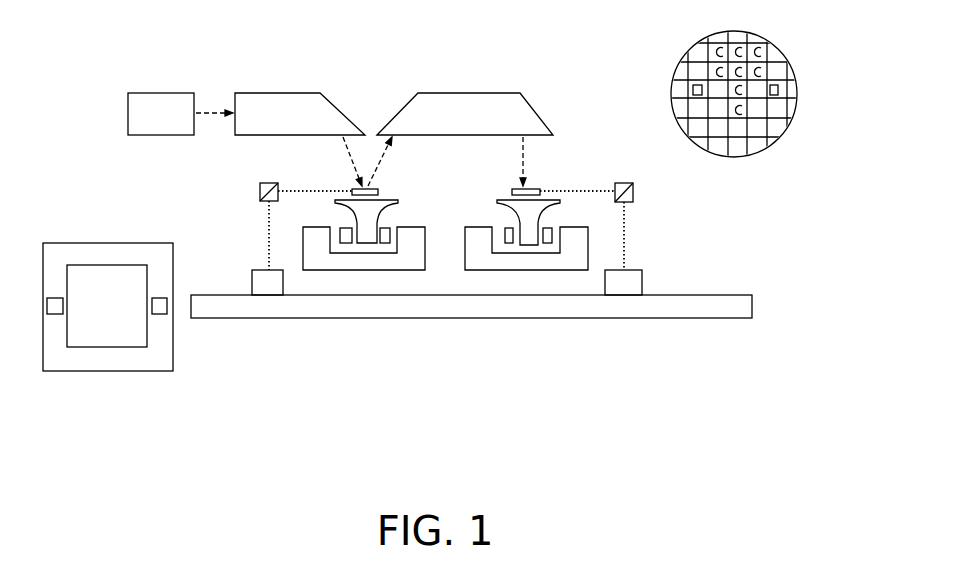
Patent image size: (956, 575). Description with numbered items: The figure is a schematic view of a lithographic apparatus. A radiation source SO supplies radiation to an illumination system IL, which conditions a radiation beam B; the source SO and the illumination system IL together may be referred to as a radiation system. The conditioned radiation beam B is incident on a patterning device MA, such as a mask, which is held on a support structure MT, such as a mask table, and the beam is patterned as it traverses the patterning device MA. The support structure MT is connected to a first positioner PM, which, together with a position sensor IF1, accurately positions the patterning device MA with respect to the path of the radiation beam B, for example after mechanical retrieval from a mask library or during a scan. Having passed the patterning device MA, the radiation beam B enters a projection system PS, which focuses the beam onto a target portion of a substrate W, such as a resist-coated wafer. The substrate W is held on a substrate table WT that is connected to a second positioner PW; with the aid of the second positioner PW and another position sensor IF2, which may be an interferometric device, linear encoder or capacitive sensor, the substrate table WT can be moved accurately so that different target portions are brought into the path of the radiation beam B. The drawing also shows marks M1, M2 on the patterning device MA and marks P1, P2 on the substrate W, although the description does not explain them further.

The radiation source SO is at (161, 114).
The illumination system IL is at (300, 114).
The projection system PS is at (465, 114).
The radiation beam B is at (350, 162).
The patterning device / mask MA is at (87, 243).
The mask table (support structure) MT is at (360, 245).
The first positioner PM is at (392, 270).
The substrate (wafer) W is at (661, 119).
The substrate table WT is at (523, 246).
The second positioner PW is at (553, 270).
The position sensor (interferometer) for mask IF1 is at (262, 184).
The position sensor (interferometer) for substrate IF2 is at (634, 192).
The mask alignment mark M1 is at (158, 314).
The mask alignment mark M2 is at (55, 314).
The substrate alignment mark P1 is at (698, 95).
The substrate alignment mark P2 is at (774, 95).